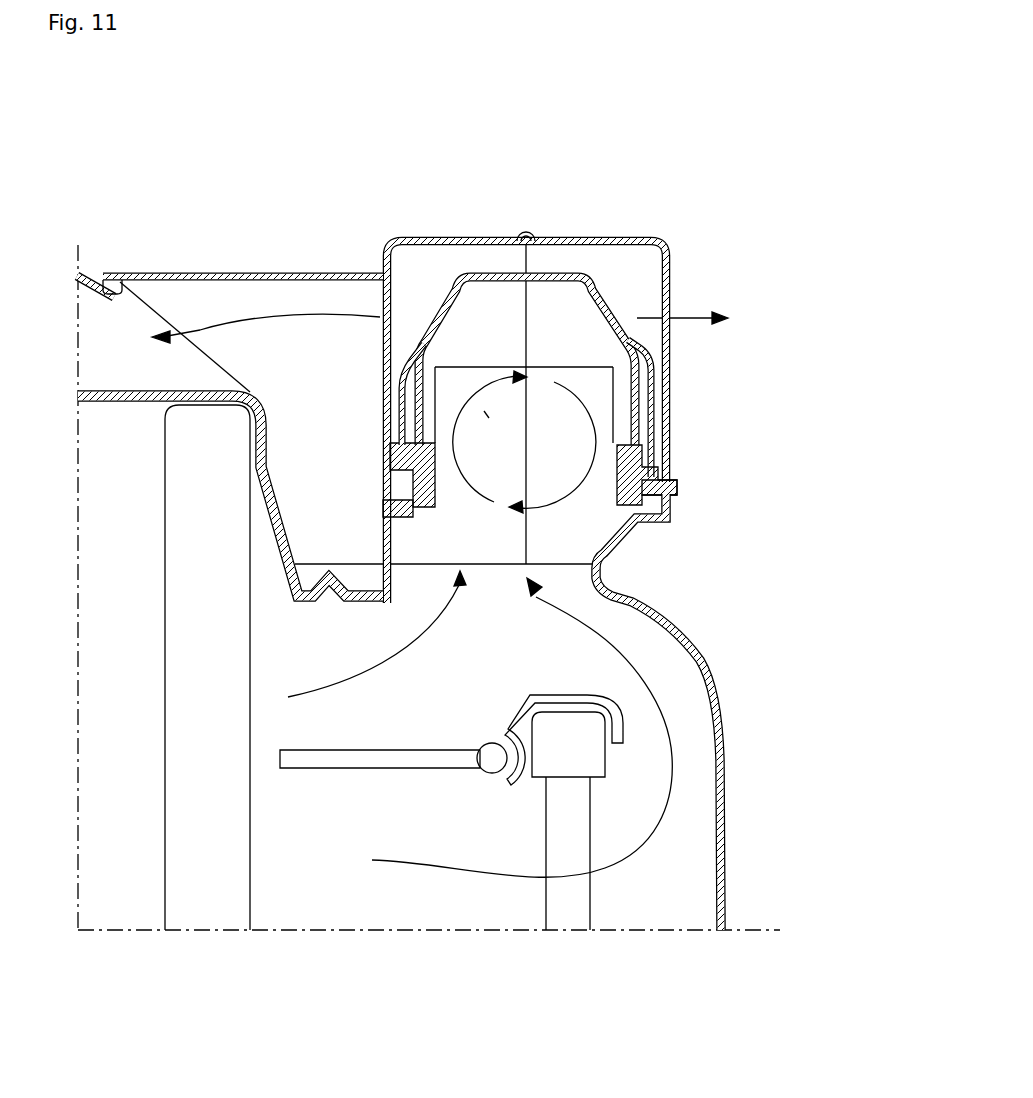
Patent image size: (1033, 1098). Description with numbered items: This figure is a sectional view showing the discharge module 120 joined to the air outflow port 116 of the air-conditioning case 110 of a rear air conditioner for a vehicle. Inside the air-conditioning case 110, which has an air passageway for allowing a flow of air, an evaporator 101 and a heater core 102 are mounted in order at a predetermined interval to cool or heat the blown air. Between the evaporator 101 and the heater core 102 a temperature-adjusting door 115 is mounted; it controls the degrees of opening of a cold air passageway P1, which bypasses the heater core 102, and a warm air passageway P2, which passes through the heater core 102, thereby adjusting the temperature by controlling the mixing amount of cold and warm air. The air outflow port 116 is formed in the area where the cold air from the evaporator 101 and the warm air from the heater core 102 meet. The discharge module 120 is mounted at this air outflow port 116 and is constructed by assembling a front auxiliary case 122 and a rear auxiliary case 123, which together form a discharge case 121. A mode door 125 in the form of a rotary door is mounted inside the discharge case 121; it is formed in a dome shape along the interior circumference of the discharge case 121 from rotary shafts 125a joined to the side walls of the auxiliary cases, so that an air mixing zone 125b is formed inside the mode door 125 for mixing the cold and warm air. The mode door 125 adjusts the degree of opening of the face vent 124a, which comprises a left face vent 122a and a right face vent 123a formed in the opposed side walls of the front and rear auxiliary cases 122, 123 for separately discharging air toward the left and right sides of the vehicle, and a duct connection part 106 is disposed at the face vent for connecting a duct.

The evaporator 101 is at (212, 890).
The heater core 102 is at (568, 908).
The duct connection part 106 is at (130, 326).
The air-conditioning case 110 is at (731, 669).
The temperature-adjusting door 115 is at (308, 762).
The air outflow port 116 is at (600, 575).
The discharge module 120 is at (679, 436).
The discharge case 121 is at (590, 148).
The front auxiliary case 122 is at (585, 236).
The left face vent 122a is at (669, 273).
The rear auxiliary case 123 is at (475, 236).
The right face vent 123a is at (384, 303).
The face vent 124a is at (796, 226).
The mode door 125 is at (609, 316).
The rotary shaft 125a is at (678, 490).
The air mixing zone 125b is at (482, 406).
The cold air passageway P1 is at (377, 635).
The warm air passageway P2 is at (522, 727).